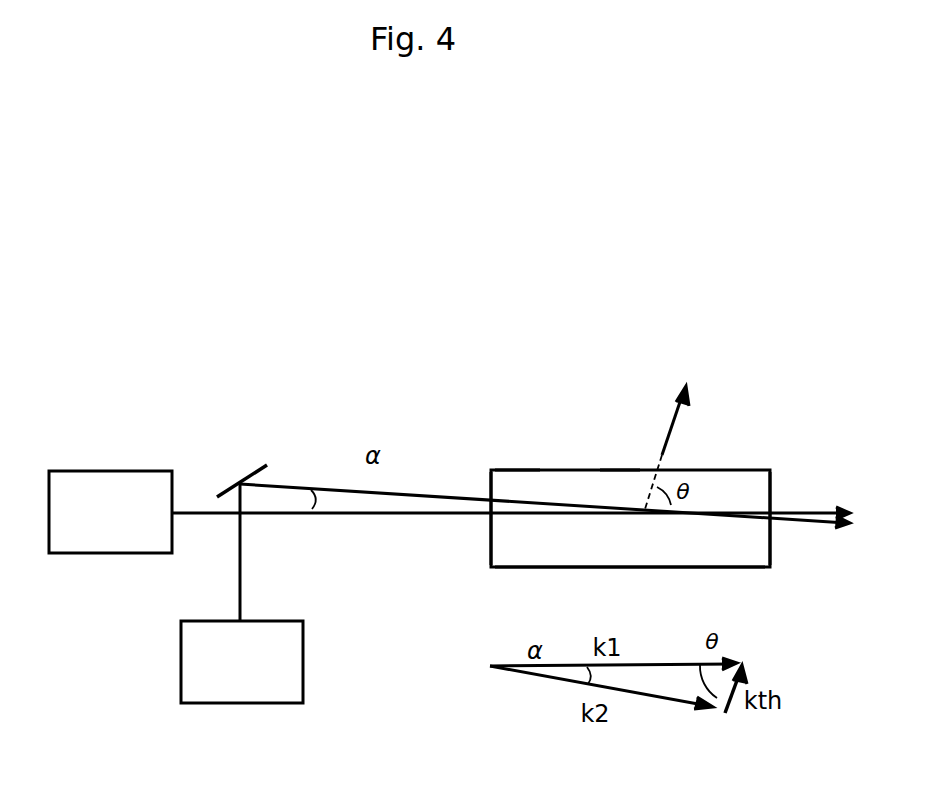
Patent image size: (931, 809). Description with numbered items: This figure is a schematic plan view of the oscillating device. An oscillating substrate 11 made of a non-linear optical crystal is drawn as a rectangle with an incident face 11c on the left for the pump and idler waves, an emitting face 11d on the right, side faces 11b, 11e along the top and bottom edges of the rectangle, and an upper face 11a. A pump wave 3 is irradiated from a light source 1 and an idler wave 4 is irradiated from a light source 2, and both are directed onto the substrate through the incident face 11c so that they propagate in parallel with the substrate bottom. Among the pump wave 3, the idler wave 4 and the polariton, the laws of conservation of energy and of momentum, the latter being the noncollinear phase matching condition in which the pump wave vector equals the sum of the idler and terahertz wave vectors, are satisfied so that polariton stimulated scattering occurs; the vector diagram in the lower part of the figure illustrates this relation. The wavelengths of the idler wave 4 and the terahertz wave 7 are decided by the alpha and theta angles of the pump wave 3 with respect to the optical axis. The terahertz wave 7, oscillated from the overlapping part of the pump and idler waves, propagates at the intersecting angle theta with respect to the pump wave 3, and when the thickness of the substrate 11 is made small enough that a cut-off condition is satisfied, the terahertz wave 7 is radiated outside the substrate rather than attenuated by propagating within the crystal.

The light source 1 is at (119, 528).
The light source 2 is at (229, 677).
The pump wave 3 is at (377, 515).
The idler wave 4 is at (285, 483).
The terahertz wave 7 is at (660, 440).
The oscillating substrate 11 is at (752, 478).
The upper face 11a is at (590, 478).
The side face 11b is at (513, 470).
The incident face 11c is at (490, 490).
The emitting face 11d is at (772, 483).
The side face 11e is at (675, 568).